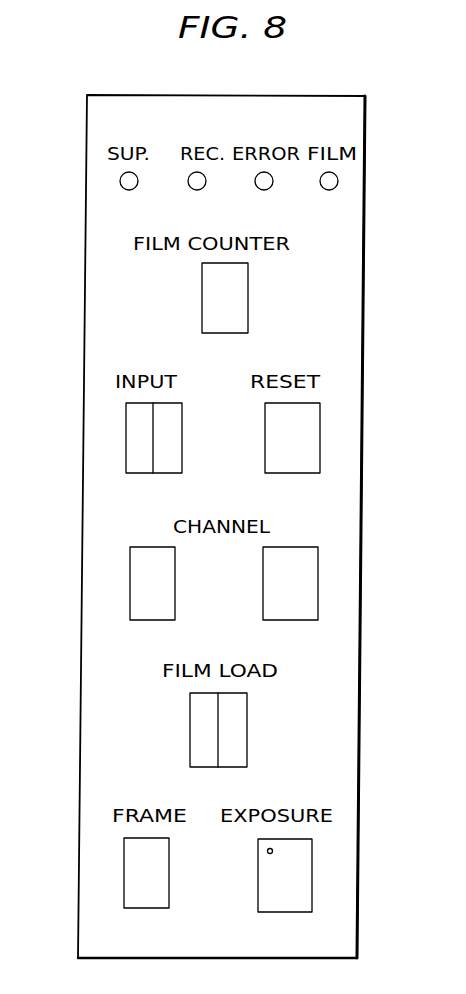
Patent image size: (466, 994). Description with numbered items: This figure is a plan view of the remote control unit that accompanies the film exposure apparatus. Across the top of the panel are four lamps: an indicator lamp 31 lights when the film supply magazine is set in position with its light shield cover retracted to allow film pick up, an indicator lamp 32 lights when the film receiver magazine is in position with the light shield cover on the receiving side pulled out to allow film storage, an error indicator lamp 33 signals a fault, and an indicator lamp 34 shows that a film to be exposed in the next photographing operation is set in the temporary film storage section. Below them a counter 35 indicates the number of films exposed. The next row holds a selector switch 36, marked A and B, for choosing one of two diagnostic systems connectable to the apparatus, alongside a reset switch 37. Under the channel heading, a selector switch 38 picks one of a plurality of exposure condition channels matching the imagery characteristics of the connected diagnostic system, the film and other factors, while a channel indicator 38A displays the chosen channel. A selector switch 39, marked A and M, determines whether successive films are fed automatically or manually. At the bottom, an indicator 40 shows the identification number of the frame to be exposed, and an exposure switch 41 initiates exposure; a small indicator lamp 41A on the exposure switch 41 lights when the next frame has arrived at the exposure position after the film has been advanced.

The indicator lamp 31 is at (121, 185).
The indicator lamp 32 is at (189, 186).
The error indicator lamp 33 is at (272, 187).
The indicator lamp 34 is at (338, 182).
The counter 35 is at (242, 313).
The selector switch 36 is at (135, 418).
The reset switch 37 is at (312, 440).
The selector switch 38 is at (307, 593).
The channel indicator 38A is at (138, 590).
The selector switch 39 is at (242, 712).
The indicator 40 is at (130, 868).
The exposure switch 41 is at (302, 885).
The indicator lamp 41A is at (267, 852).